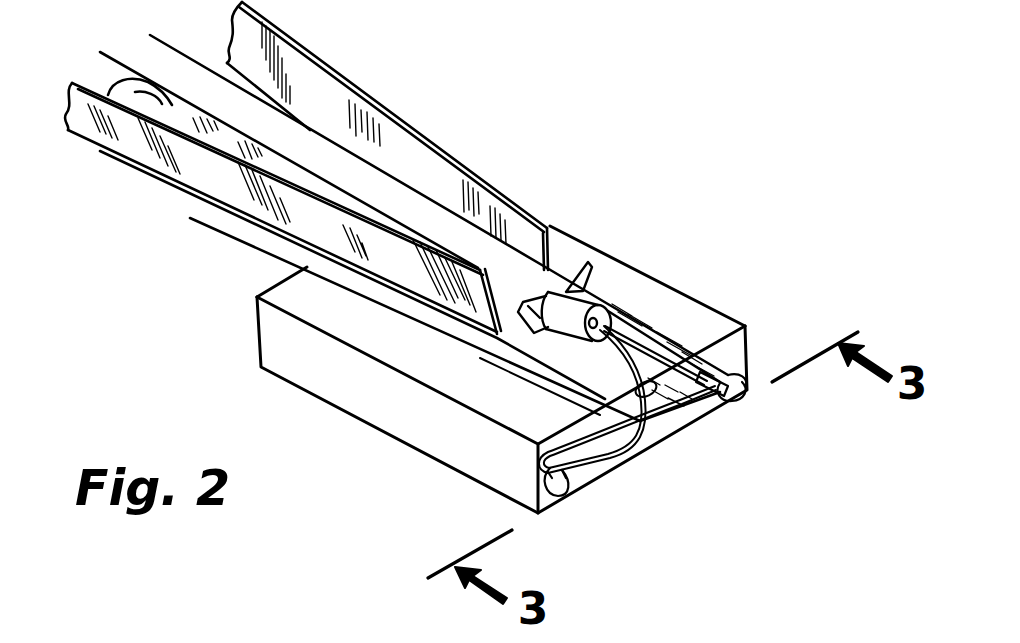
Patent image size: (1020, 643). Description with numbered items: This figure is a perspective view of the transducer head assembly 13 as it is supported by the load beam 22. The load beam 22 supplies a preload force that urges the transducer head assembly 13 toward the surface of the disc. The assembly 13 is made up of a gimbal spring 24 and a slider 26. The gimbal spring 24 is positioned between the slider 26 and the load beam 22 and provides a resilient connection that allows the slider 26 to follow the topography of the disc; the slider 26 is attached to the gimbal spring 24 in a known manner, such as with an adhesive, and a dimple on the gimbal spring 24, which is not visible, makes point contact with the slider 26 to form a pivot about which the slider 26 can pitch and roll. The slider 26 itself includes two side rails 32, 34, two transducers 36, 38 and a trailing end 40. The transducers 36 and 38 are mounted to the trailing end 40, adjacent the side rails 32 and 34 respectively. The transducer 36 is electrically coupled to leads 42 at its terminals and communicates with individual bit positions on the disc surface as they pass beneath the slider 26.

The channel assembly 13 is at (609, 230).
The far rail 22 is at (415, 163).
The slider 24 is at (681, 368).
The base block 26 is at (344, 368).
The spring clip 32 is at (560, 500).
The slot 34 is at (742, 402).
The retaining tab 36 is at (565, 486).
The end tip 38 is at (728, 396).
The retainer plate 40 is at (650, 436).
The wire loop 42 is at (546, 438).